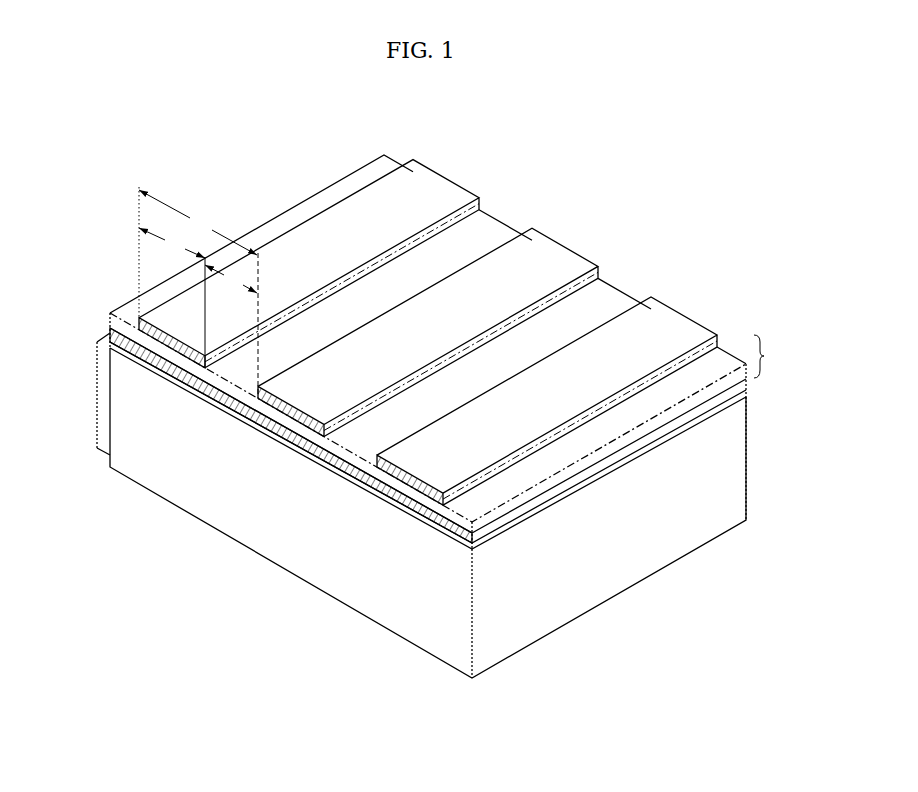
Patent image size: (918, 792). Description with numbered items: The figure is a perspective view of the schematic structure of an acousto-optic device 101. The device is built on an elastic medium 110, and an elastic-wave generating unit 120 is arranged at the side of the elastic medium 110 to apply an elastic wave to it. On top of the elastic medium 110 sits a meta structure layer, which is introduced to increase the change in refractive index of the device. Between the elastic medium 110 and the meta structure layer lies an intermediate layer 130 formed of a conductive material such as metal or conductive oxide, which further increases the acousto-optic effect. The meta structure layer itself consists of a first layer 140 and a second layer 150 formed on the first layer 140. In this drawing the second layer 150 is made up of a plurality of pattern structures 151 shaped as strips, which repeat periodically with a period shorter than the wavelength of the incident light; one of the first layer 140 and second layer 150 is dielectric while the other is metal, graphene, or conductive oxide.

The acousto-optic device 101 is at (616, 190).
The elastic medium 110 is at (425, 630).
The elastic-wave generating unit 120 is at (106, 458).
The intermediate layer 130 is at (415, 515).
The first layer 140 is at (378, 478).
The second layer 150 is at (133, 321).
The pattern structures 151 is at (568, 266).